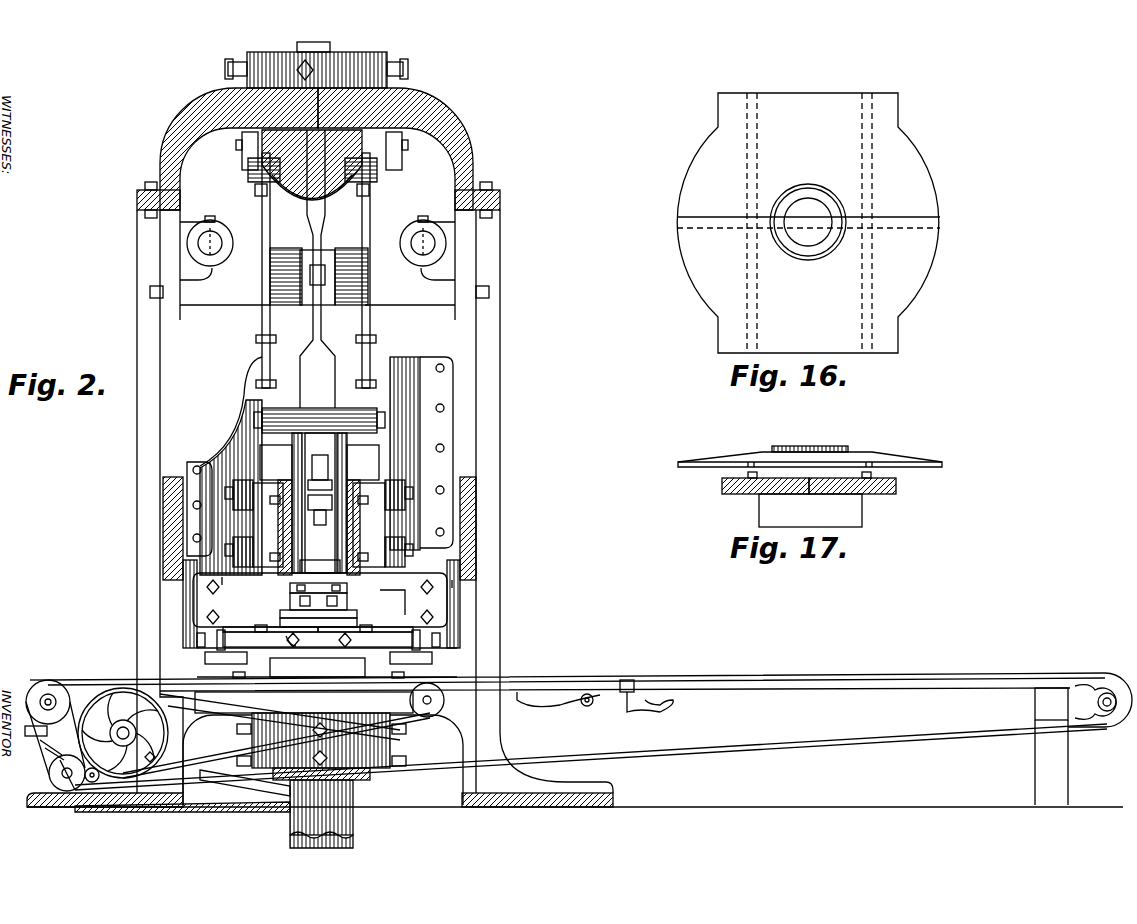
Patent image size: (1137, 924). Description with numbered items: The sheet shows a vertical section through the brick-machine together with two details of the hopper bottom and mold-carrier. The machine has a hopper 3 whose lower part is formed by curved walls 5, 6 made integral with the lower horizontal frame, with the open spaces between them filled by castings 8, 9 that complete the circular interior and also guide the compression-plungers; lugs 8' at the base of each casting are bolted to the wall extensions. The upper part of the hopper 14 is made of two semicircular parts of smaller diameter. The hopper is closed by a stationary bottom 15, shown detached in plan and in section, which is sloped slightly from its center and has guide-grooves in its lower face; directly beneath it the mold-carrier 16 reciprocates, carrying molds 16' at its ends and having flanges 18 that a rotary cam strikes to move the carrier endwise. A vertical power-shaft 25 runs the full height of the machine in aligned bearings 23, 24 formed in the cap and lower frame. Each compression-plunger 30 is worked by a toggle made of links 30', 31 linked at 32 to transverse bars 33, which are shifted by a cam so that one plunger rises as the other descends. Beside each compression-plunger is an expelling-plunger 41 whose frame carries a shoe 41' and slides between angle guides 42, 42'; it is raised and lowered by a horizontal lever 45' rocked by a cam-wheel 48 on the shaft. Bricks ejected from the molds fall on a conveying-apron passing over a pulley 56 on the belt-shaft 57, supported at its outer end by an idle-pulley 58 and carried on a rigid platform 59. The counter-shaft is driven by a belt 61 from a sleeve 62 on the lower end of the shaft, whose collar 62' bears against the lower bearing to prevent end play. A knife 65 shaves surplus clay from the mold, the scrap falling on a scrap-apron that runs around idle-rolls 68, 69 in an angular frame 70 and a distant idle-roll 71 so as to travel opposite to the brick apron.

In FIG. 2, the hopper 3 is at (232, 440).
In FIG. 2, the segmental wall 5 is at (183, 607).
In FIG. 2, the segmental wall 6 is at (465, 602).
In FIG. 2, the casting 8 is at (320, 600).
In FIG. 2, the ears or lugs 8' is at (429, 602).
In FIG. 2, the casting 9 is at (392, 602).
In FIG. 2, the upper part of the hopper 14 is at (404, 357).
In FIG. 16, the stationary bottom 15 is at (808, 223).
In FIG. 17, the stationary bottom 15 is at (912, 458).
In FIG. 2, the mold-carrier 16 is at (318, 639).
In FIG. 2, the molds 16' is at (330, 616).
In FIG. 17, the lugs or flanges 18 is at (810, 510).
In FIG. 2, the bearing 23 is at (316, 65).
In FIG. 2, the bearing 24 is at (321, 740).
In FIG. 2, the vertical power-shaft 25 is at (343, 845).
In FIG. 2, the compression-plunger 30 is at (320, 514).
In FIG. 2, the links 30' is at (319, 398).
In FIG. 2, the links 31 is at (322, 228).
In FIG. 2, the toggle-joint link 32 is at (350, 278).
In FIG. 2, the transverse bars 33 is at (317, 294).
In FIG. 2, the expelling-plunger 41 is at (306, 596).
In FIG. 2, the shoe 41' is at (331, 604).
In FIG. 2, the vertical guide 42 is at (383, 523).
In FIG. 2, the vertical guide 42' is at (254, 523).
In FIG. 2, the horizontal lever 45' is at (340, 165).
In FIG. 2, the cam-wheel 48 is at (252, 162).
In FIG. 2, the pulley 56 is at (48, 744).
In FIG. 2, the belt-shaft 57 is at (123, 733).
In FIG. 2, the idle-pulley 58 is at (1105, 720).
In FIG. 2, the platform or table 59 is at (565, 724).
In FIG. 2, the belt 61 is at (248, 788).
In FIG. 2, the sleeve 62 is at (343, 807).
In FIG. 2, the annular flange or collar 62' is at (339, 774).
In FIG. 2, the knife or clearer 65 is at (290, 642).
In FIG. 2, the upper idle-roll 68 is at (36, 686).
In FIG. 2, the lower idle-roll 69 is at (49, 769).
In FIG. 2, the angular frame 70 is at (40, 724).
In FIG. 2, the idle-roll 71 is at (410, 698).